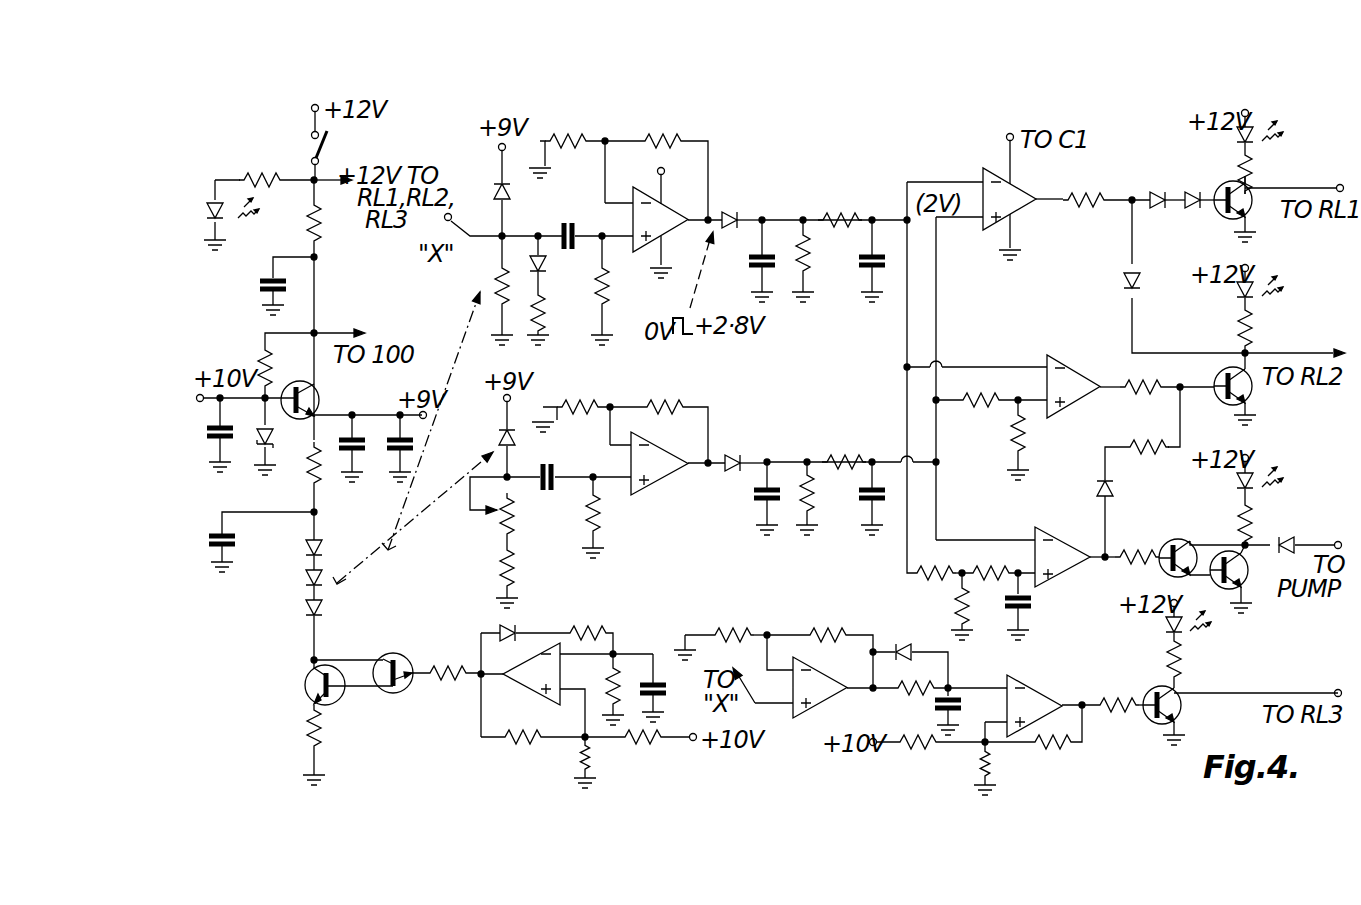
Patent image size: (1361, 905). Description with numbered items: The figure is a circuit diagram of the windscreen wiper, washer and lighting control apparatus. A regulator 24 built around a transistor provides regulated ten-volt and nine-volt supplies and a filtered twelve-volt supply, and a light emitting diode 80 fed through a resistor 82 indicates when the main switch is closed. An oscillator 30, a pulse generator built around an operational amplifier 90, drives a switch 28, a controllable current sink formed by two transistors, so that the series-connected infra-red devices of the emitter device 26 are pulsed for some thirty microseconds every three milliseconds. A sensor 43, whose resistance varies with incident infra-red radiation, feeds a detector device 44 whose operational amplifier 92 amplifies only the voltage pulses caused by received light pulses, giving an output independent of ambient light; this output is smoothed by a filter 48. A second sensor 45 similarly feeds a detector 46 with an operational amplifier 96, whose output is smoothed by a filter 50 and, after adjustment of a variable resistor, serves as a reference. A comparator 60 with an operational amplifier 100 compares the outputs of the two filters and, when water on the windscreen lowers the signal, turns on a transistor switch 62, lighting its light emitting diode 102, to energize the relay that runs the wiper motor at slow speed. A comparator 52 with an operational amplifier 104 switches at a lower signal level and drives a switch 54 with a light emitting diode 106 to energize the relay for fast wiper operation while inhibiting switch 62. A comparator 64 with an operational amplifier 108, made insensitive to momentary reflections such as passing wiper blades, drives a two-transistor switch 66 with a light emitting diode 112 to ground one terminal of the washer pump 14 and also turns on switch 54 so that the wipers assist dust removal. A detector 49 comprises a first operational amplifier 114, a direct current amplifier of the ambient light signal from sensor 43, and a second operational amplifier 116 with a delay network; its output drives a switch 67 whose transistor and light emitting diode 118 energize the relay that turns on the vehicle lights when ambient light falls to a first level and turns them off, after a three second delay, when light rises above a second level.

The washer pump 14 is at (1312, 609).
The regulator 24 is at (392, 375).
The emitter device 26 is at (332, 596).
The switch 28 is at (356, 696).
The oscillator 30 is at (478, 716).
The sensor 43 is at (497, 188).
The detector device 44 is at (619, 134).
The sensor 45 is at (497, 438).
The detector 46 is at (650, 492).
The filter 48 is at (788, 210).
The detector 49 is at (807, 722).
The filter 50 is at (864, 444).
The comparator 52 is at (1057, 345).
The switch 54 is at (1198, 333).
The comparator 60 is at (992, 162).
The transistor switch 62 is at (1174, 140).
The comparator 64 is at (1053, 602).
The switch 66 is at (1173, 525).
The switch 67 is at (1149, 664).
The light emitting diode 80 is at (221, 226).
The resistor 82 is at (268, 171).
The operational amplifier 90 is at (533, 690).
The operational amplifier 92 is at (656, 248).
The operational amplifier 96 is at (666, 470).
The operational amplifier 100 is at (988, 234).
The light emitting diode 102 is at (1255, 144).
The operational amplifier 104 is at (1070, 375).
The light emitting diode 106 is at (1238, 296).
The operational amplifier 108 is at (1072, 564).
The light emitting diode 112 is at (1238, 485).
The first operational amplifier 114 is at (824, 700).
The second operational amplifier 116 is at (1035, 686).
The light emitting diode 118 is at (1190, 633).